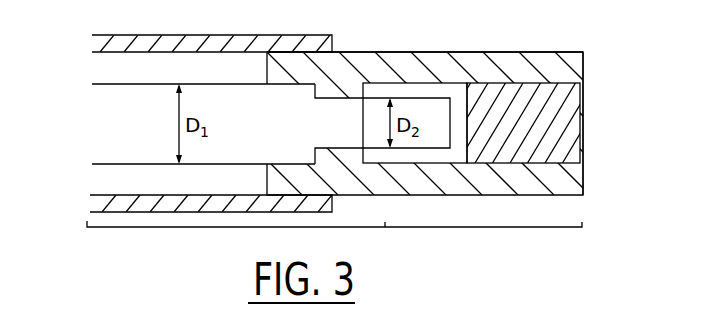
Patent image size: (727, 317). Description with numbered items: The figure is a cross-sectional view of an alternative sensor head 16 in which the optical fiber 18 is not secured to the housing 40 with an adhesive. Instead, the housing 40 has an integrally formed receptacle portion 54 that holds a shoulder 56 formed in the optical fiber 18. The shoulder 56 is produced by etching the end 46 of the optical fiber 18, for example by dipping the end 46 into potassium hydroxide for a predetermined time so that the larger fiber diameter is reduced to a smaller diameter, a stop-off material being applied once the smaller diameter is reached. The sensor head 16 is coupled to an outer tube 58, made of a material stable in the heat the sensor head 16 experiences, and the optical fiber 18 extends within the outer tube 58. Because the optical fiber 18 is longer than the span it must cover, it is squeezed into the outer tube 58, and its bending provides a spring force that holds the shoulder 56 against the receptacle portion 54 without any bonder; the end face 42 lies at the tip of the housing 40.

The sensor head 16 is at (334, 244).
The optical fiber 18 is at (100, 102).
The housing 40 is at (527, 52).
The end face 42 is at (580, 118).
The end 46 is at (450, 123).
The receptacle portion 54 is at (318, 96).
The shoulder 56 is at (355, 97).
The outer tube 58 is at (180, 35).